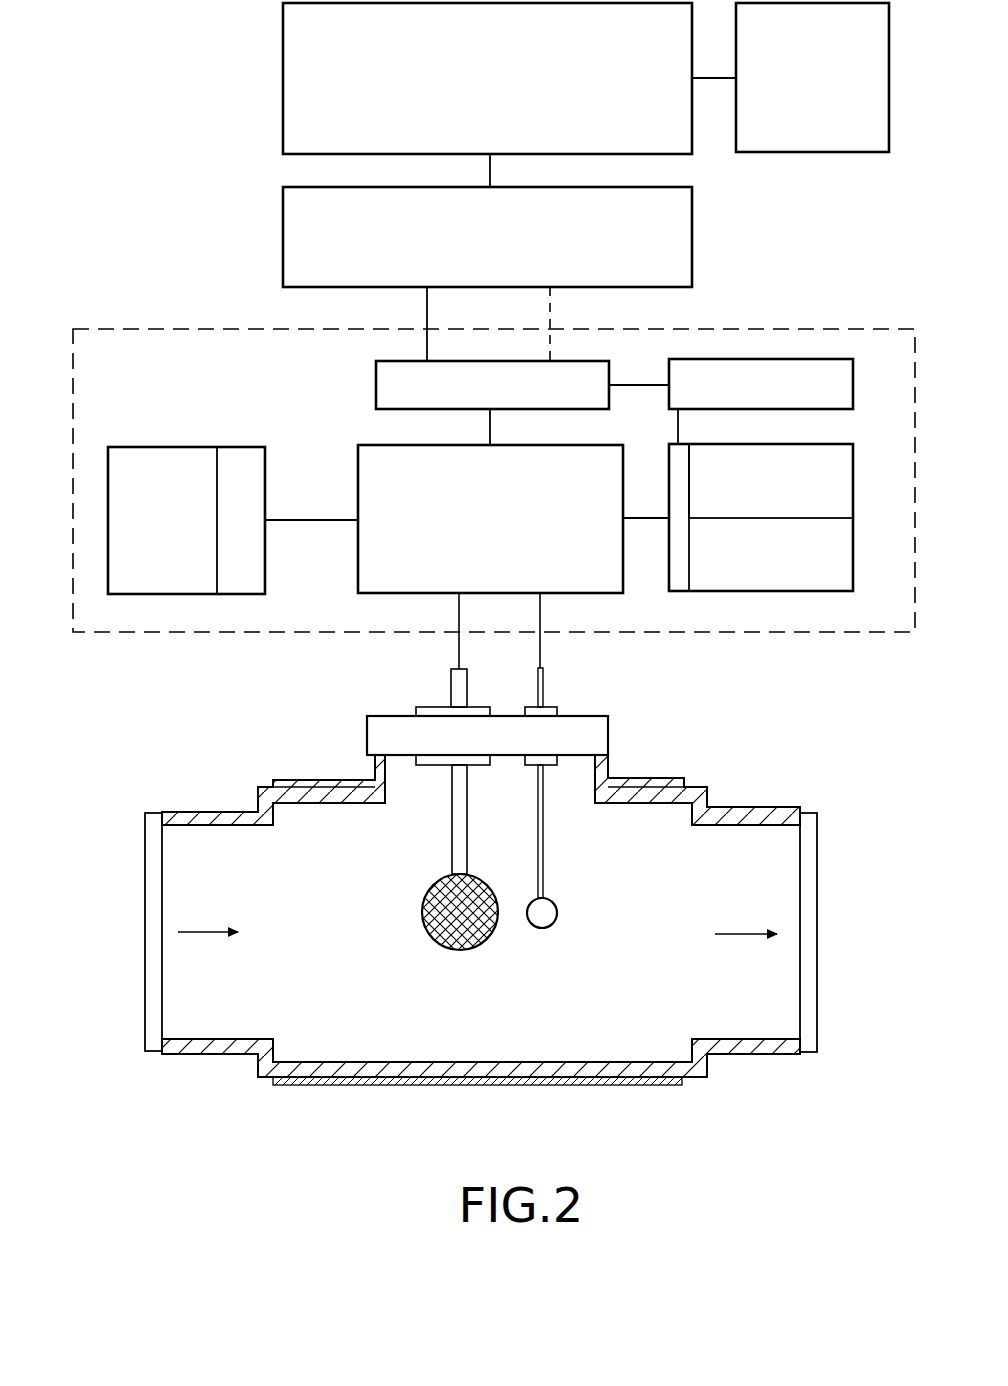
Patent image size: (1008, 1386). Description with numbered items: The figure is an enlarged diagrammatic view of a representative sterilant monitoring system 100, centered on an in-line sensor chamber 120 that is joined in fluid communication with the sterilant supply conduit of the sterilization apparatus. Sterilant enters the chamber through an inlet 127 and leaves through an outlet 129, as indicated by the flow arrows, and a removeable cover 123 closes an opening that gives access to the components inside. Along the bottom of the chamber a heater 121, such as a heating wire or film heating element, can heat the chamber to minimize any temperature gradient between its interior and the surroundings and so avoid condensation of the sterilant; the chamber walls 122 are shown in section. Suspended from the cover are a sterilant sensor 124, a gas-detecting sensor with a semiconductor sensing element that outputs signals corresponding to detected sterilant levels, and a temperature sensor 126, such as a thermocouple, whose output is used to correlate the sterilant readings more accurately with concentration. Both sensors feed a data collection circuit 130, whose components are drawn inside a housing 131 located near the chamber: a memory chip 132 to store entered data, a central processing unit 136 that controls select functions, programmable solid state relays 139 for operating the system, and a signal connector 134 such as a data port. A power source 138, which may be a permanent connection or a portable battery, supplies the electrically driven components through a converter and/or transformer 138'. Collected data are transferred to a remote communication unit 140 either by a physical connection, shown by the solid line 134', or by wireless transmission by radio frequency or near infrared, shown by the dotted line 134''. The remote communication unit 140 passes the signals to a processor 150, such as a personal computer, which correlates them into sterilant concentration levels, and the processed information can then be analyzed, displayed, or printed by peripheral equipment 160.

The sterilant monitoring system 100 is at (146, 145).
The sensor chamber 120 is at (489, 929).
The heater 121 is at (403, 1086).
The cell housing 122 is at (582, 1076).
The removeable cover 123 is at (604, 740).
The sterilant sensor 124 is at (435, 938).
The temperature sensor 126 is at (547, 928).
The inlet 127 is at (173, 1003).
The outlet 129 is at (788, 1000).
The data collection circuit 130 is at (612, 601).
The housing 131 is at (103, 328).
The memory chip 132 is at (773, 578).
The signal connector 134 is at (461, 403).
The solid line 134' is at (383, 324).
The dotted line 134'' is at (609, 324).
The central processing unit 136 is at (850, 495).
The power source 138 is at (178, 565).
The converter and/or transformer 138' is at (247, 564).
The programmable solid state relays 139 is at (820, 371).
The remote communication unit 140 is at (672, 240).
The processor 150 is at (300, 100).
The peripheral equipment 160 is at (812, 137).